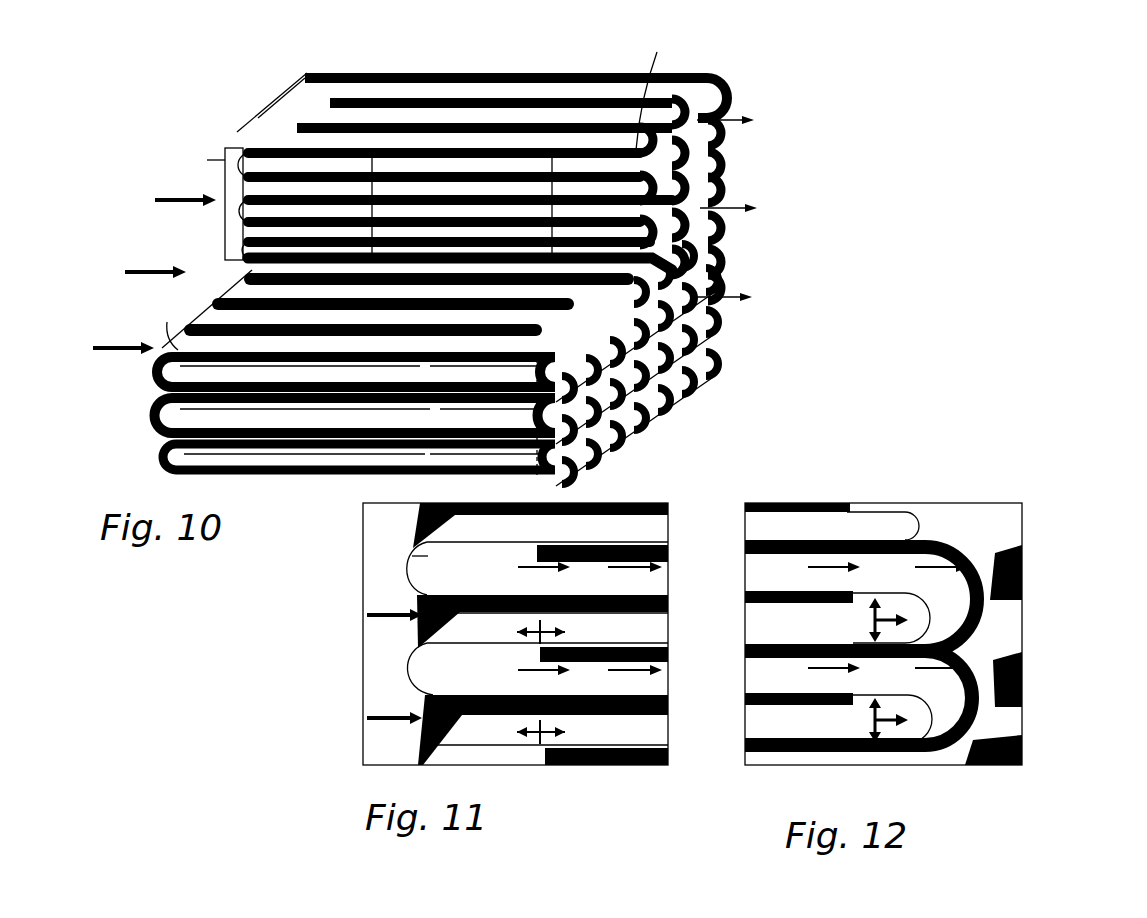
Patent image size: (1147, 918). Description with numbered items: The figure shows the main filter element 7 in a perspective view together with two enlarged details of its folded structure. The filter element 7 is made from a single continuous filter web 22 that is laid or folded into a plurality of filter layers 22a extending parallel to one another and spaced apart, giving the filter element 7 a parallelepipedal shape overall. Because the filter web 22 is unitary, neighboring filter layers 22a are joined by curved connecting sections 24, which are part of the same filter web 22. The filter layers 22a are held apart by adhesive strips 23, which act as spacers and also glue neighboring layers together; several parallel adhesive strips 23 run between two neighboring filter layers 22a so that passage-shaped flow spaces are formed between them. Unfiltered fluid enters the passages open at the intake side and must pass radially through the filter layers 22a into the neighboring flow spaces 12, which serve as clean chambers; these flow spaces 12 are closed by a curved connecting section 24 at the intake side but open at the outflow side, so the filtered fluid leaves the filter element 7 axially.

In FIG. 10, the main filter element 7 is at (265, 62).
In FIG. 11, the flow space 12 is at (412, 556).
In FIG. 10, the filter web 22 is at (262, 114).
In FIG. 11, the filter web 22 is at (408, 577).
In FIG. 10, the filter layer 22a is at (443, 90).
In FIG. 10, the adhesive strip 23 is at (156, 458).
In FIG. 11, the adhesive strip 23 is at (417, 628).
In FIG. 12, the adhesive strip 23 is at (970, 555).
In FIG. 10, the curved connecting section 24 is at (212, 319).
In FIG. 11, the curved connecting section 24 is at (410, 668).
In FIG. 12, the curved connecting section 24 is at (927, 528).